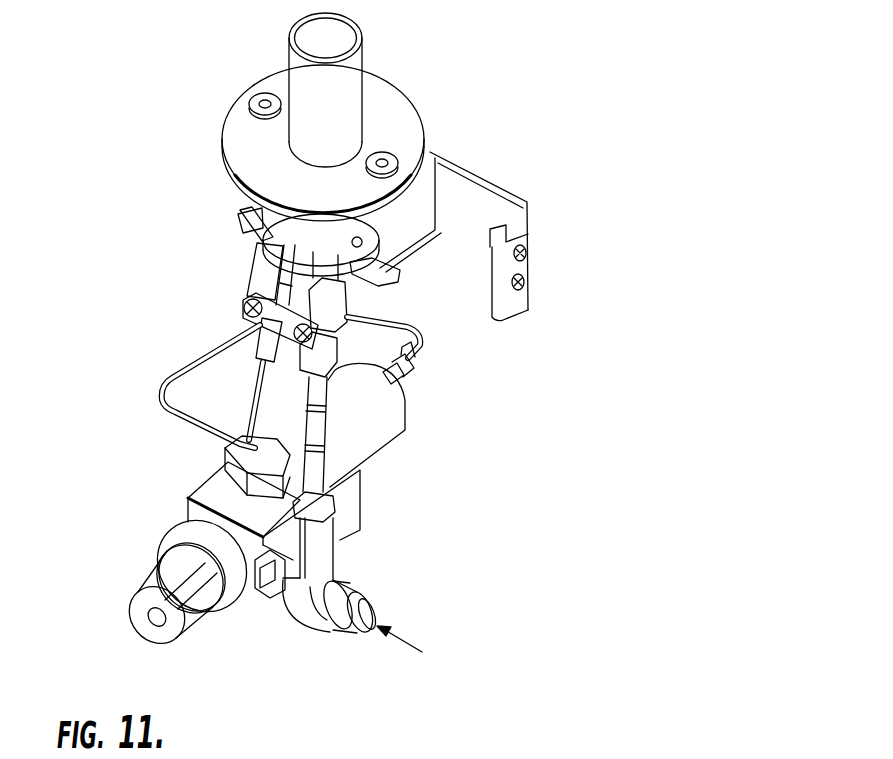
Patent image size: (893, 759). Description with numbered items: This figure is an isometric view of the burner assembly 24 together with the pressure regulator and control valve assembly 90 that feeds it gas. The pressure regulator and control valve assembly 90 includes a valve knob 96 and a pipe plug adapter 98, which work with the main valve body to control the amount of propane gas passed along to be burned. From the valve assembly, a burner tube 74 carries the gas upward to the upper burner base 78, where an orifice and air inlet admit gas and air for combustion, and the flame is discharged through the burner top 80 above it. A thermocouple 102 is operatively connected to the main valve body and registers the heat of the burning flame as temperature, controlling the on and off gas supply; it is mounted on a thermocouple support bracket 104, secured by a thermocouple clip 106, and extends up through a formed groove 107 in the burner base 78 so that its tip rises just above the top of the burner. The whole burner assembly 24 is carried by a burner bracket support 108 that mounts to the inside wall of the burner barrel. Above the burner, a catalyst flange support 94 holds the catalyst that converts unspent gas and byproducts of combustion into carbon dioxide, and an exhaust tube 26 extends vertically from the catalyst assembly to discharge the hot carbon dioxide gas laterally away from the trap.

The burner assembly 24 is at (504, 419).
The exhaust tube 26 is at (362, 60).
The burner tube 74 is at (318, 438).
The burner base 78 is at (420, 348).
The burner top 80 is at (365, 246).
The pressure regulator and control valve assembly 90 is at (364, 440).
The catalyst flange support 94 is at (423, 120).
The valve knob 96 is at (197, 619).
The pipe plug adapter 98 is at (230, 488).
The thermocouple 102 is at (293, 262).
The thermocouple support bracket 104 is at (263, 275).
The thermocouple clip 106 is at (265, 328).
The formed groove 107 is at (382, 270).
The burner bracket support 108 is at (530, 213).